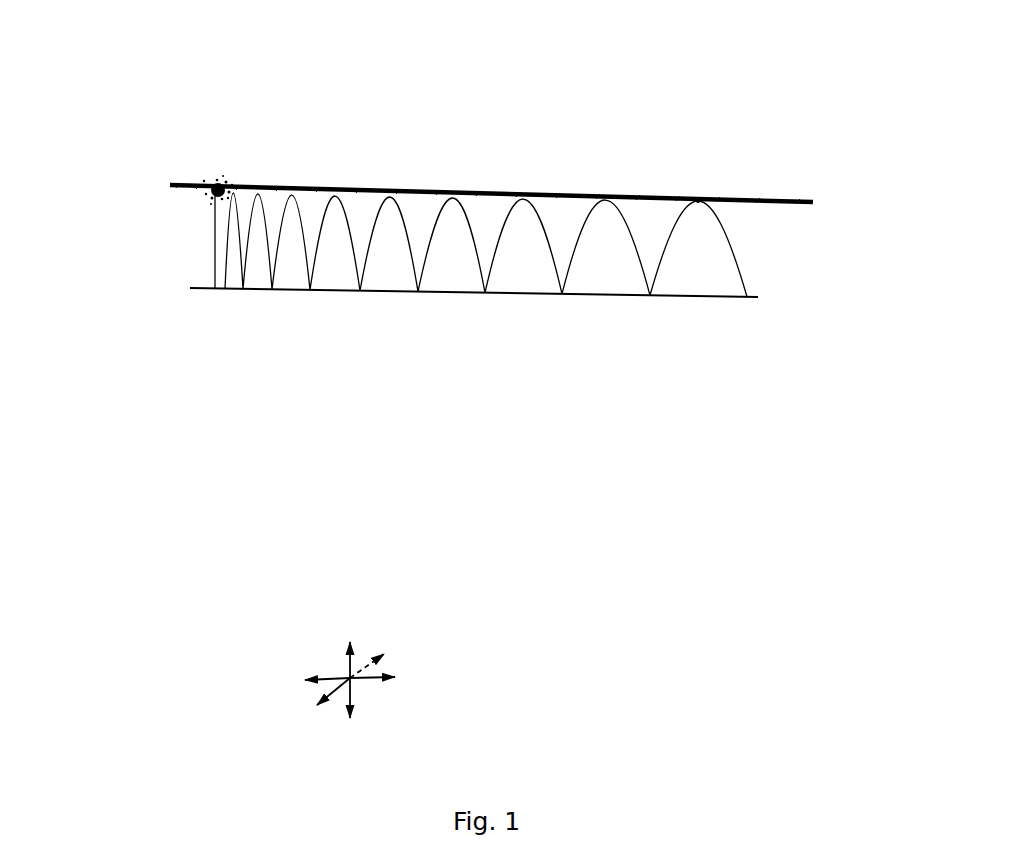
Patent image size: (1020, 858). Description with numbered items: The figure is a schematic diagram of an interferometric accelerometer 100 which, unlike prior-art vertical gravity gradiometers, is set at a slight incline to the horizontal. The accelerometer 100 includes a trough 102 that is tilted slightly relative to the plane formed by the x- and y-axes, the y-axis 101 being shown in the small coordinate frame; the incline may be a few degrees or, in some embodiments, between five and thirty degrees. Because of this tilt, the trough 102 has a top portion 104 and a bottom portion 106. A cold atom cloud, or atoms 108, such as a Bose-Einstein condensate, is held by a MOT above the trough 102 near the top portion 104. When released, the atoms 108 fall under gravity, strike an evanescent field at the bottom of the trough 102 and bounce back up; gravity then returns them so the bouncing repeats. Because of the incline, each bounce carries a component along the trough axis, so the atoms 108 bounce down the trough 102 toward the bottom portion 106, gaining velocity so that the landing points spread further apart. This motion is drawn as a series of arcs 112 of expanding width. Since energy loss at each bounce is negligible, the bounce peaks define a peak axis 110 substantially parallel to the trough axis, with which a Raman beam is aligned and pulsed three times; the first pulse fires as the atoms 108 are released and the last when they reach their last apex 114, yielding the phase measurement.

The interferometric accelerometer 100 is at (420, 94).
The y-axis 101 is at (323, 677).
The trough 102 is at (598, 275).
The top portion 104 is at (175, 247).
The bottom portion 106 is at (773, 274).
The cold atom cloud (atoms) 108 is at (202, 203).
The peak axis 110 is at (767, 198).
The arcs 112 is at (477, 247).
The last apex 114 is at (698, 200).